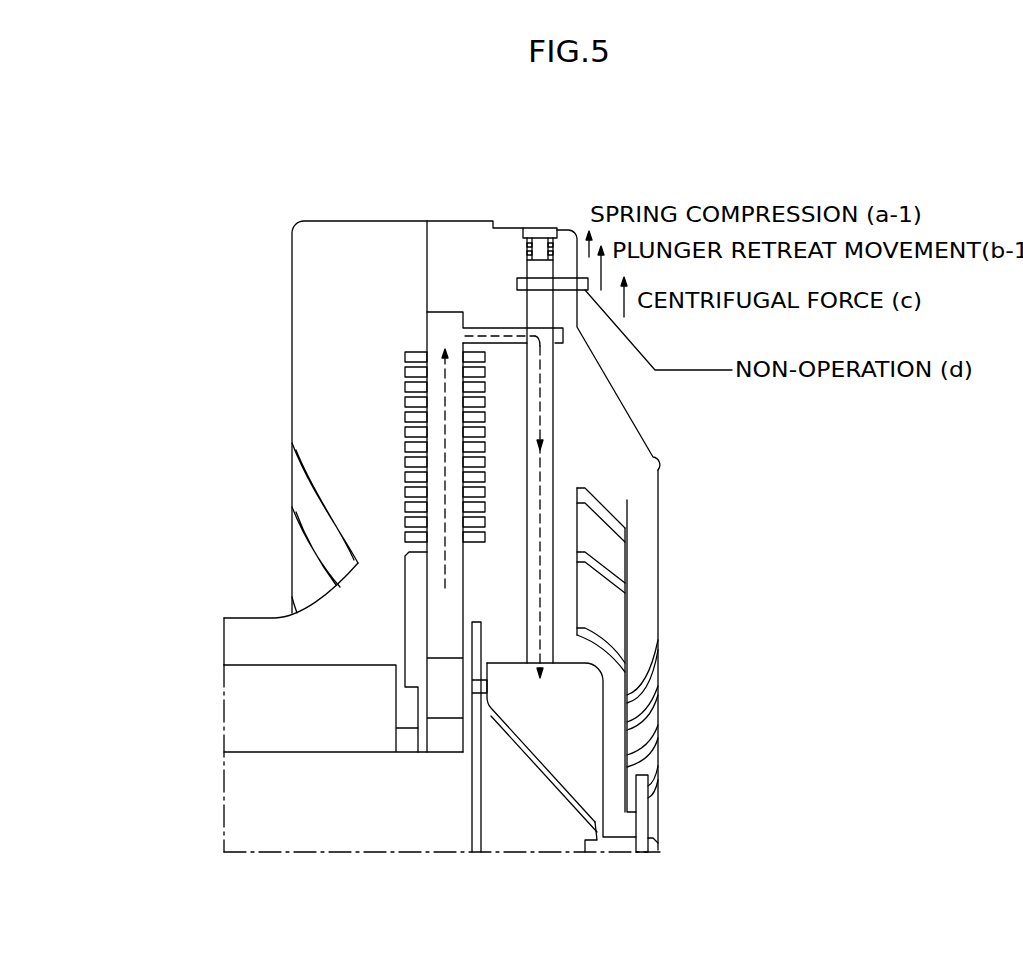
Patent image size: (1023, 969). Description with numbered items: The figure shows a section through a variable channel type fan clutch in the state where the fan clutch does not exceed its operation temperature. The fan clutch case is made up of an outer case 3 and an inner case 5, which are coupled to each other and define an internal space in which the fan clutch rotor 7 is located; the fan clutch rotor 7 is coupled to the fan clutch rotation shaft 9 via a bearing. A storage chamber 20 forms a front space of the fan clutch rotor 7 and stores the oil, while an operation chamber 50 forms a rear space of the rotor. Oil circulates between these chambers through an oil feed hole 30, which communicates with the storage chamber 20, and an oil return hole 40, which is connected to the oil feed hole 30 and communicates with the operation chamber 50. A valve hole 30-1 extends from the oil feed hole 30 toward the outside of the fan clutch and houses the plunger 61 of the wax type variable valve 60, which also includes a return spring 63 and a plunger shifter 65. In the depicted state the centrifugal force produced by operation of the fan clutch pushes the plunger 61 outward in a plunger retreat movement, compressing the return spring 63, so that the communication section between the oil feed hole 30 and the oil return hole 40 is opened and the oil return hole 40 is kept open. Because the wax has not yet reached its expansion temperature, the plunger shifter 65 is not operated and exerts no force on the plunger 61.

The outer case 3 is at (642, 598).
The inner case 5 is at (320, 327).
The fan clutch rotor 7 is at (438, 453).
The fan clutch rotation shaft 9 is at (277, 793).
The storage chamber 20 is at (562, 717).
The oil feed hole 30 is at (538, 468).
The valve hole 30-1 is at (553, 268).
The oil return hole 40 is at (490, 333).
The operation chamber 50 is at (405, 428).
The wax type variable valve 60 is at (468, 116).
The plunger 61 is at (535, 318).
The return spring 63 is at (550, 237).
The plunger shifter 65 is at (543, 283).